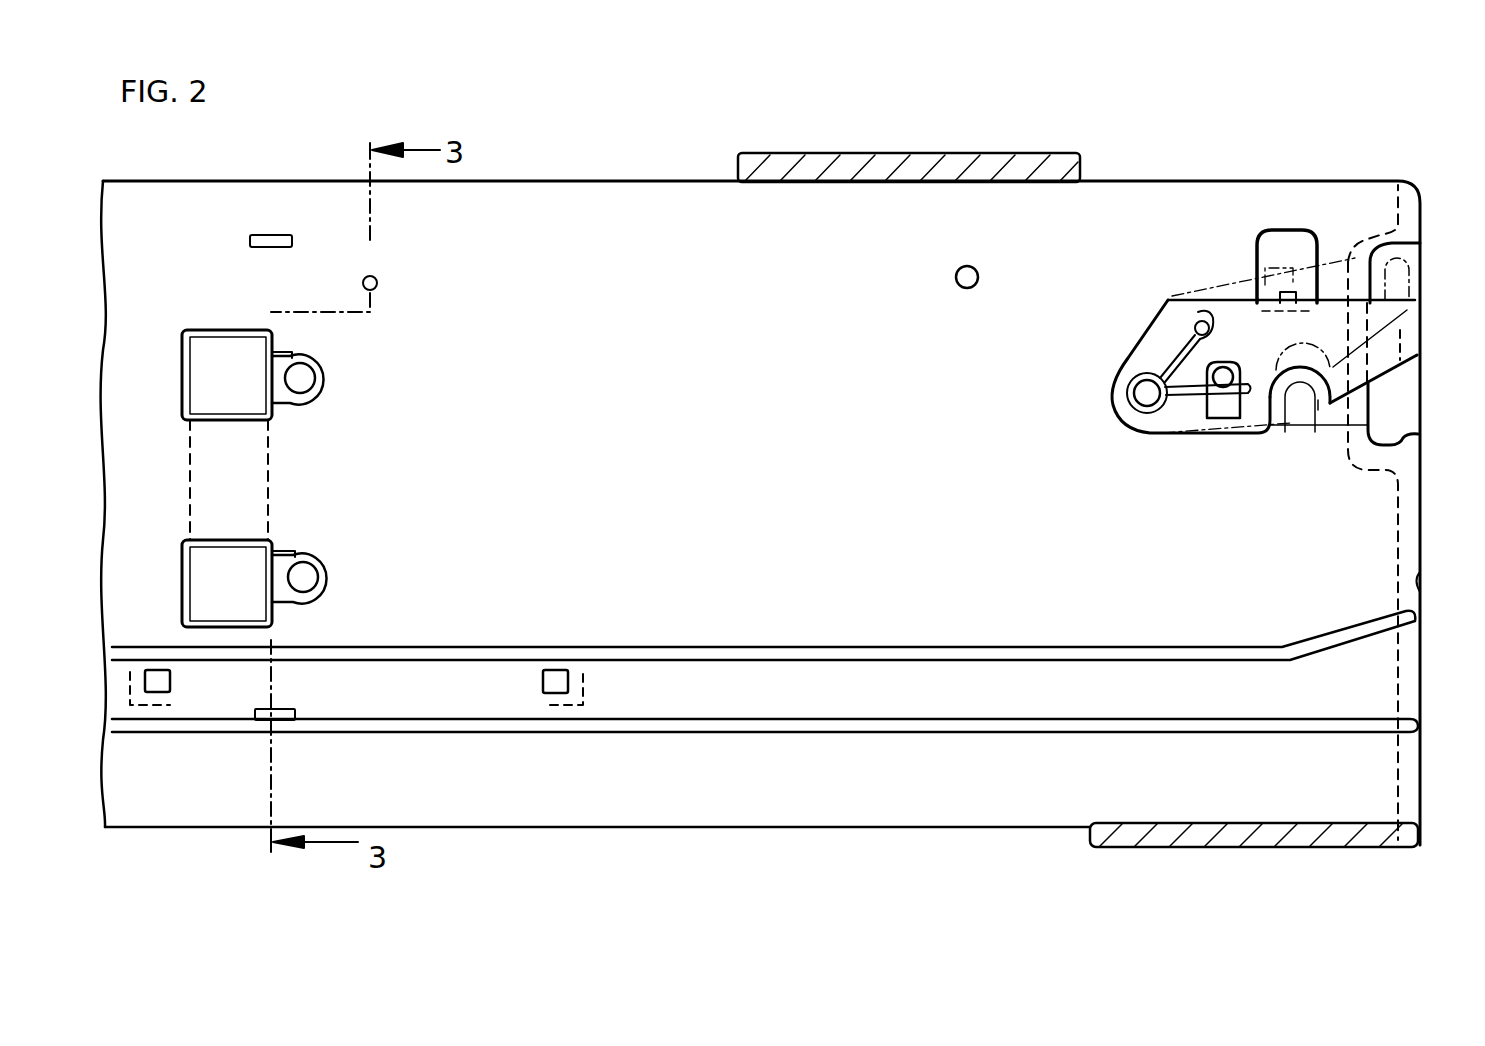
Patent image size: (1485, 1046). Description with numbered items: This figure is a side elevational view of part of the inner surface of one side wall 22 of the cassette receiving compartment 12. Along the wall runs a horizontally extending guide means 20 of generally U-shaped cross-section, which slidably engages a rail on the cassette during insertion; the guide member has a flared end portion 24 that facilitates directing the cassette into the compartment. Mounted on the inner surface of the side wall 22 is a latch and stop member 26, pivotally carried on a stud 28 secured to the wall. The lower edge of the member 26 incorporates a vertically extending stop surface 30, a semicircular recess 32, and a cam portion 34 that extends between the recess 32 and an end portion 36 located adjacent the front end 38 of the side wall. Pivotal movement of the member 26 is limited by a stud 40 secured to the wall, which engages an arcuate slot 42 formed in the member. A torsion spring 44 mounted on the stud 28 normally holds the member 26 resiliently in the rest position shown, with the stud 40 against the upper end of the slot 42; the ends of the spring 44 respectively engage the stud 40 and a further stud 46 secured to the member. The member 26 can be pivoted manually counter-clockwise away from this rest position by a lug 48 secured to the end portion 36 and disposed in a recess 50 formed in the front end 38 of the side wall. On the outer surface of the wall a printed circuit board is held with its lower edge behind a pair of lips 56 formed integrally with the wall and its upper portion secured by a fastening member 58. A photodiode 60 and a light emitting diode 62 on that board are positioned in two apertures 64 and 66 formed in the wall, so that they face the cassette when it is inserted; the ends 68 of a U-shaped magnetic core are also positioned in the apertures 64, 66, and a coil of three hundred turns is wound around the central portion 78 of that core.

The compartment 12 is at (1168, 173).
The guide means 20 is at (873, 727).
The side wall 22 is at (648, 213).
The end portion 24 is at (1352, 637).
The latch and stop member 26 is at (1130, 430).
The stud 28 is at (1140, 393).
The stop surface 30 is at (1285, 437).
The semicircular recess 32 is at (1312, 437).
The cam portion 34 is at (1419, 405).
The end portion 36 is at (1420, 322).
The front end 38 is at (1443, 558).
The stud 40 is at (1230, 367).
The arcuate slot 42 is at (1213, 420).
The torsion spring 44 is at (1183, 357).
The stud 46 is at (1195, 325).
The lug 48 is at (1420, 380).
The recess 50 is at (1419, 445).
The lips 56 is at (143, 710).
The fastening member 58 is at (377, 286).
The photodiode 60 is at (303, 378).
The light emitting diode 62 is at (305, 577).
The aperture 64 is at (290, 357).
The aperture 66 is at (287, 557).
The ends 68 is at (210, 372).
The central portion 78 is at (267, 463).